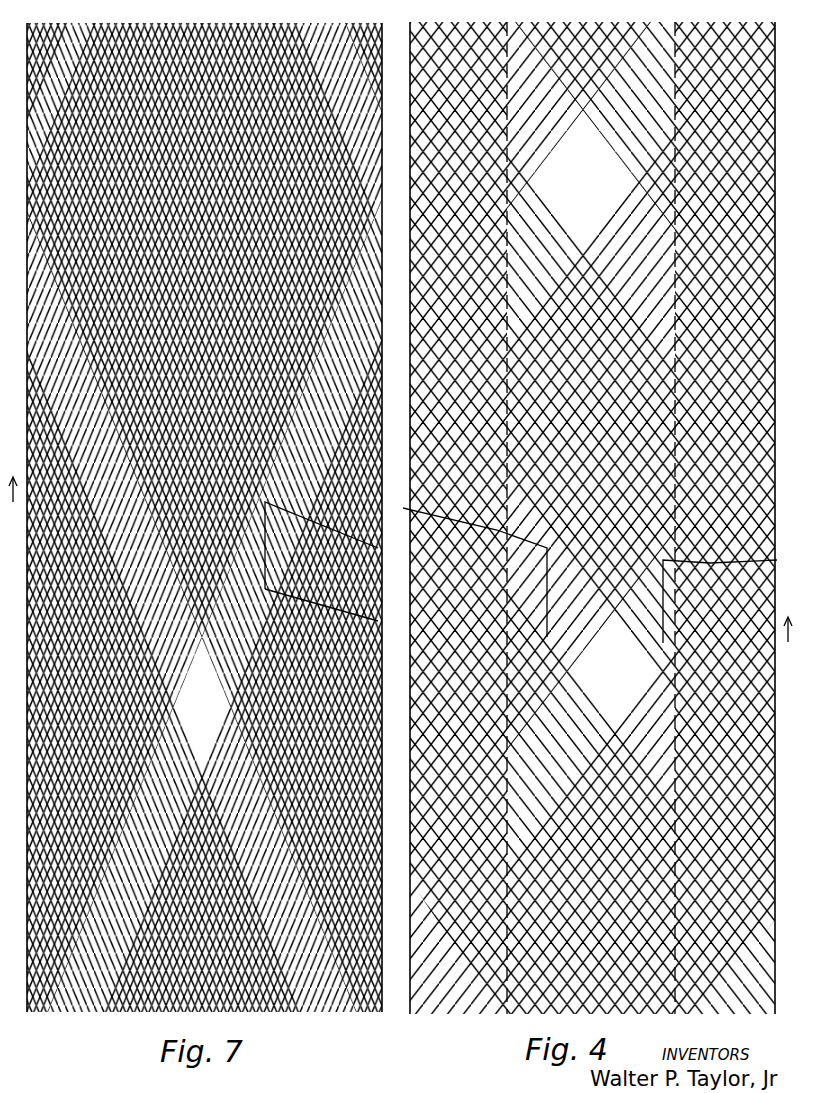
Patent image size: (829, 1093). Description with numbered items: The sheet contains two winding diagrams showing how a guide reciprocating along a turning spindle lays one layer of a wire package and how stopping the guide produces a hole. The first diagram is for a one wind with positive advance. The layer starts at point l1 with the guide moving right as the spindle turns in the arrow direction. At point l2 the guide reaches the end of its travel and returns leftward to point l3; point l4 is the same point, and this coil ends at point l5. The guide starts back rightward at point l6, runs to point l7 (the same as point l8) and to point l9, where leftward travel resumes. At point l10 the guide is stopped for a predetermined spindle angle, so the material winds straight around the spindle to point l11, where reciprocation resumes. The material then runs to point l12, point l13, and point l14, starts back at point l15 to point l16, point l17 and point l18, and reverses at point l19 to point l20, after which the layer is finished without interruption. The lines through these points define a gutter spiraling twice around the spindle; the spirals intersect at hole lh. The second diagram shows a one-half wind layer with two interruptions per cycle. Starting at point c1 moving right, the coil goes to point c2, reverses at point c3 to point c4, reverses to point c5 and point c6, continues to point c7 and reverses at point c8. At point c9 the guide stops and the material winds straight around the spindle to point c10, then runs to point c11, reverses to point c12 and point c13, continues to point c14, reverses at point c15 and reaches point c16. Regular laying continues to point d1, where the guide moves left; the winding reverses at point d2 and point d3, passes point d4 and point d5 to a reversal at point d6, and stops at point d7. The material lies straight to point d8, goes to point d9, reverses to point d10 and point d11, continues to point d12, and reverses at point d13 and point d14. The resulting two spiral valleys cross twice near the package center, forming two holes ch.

In FIG. 7, the winding point l4 is at (63, 69).
In FIG. 7, the winding point l13 is at (79, 124).
In FIG. 7, the winding point l17 is at (280, 77).
In FIG. 7, the winding point l8 is at (308, 77).
In FIG. 7, the winding point l1 is at (336, 77).
In FIG. 7, the winding point l5 is at (29, 133).
In FIG. 7, the winding point l6 is at (29, 186).
In FIG. 7, the winding point l14 is at (28, 236).
In FIG. 7, the winding point l15 is at (29, 326).
In FIG. 7, the winding point l2 is at (372, 203).
In FIG. 7, the winding point l9 is at (372, 226).
In FIG. 7, the winding point l18 is at (372, 262).
In FIG. 7, the winding point l19 is at (372, 293).
In FIG. 7, the winding point l10 is at (333, 545).
In FIG. 7, the winding point l11 is at (333, 609).
In FIG. 7, the hole lh is at (202, 702).
In FIG. 7, the winding point l3 is at (76, 1013).
In FIG. 7, the winding point l12 is at (110, 1013).
In FIG. 7, the winding point l20 is at (122, 1013).
In FIG. 7, the winding point l7 is at (288, 1013).
In FIG. 7, the winding point l16 is at (292, 1013).
In FIG. 4, the winding point c13 is at (417, 13).
In FIG. 4, the winding point c6 is at (506, 509).
In FIG. 4, the winding point c1 is at (522, 25).
In FIG. 4, the winding point d1 is at (661, 13).
In FIG. 4, the winding point d5 is at (681, 509).
In FIG. 4, the winding point d11 is at (753, 13).
In FIG. 4, the hole ch is at (591, 415).
In FIG. 4, the winding point c2 is at (768, 348).
In FIG. 4, the winding point c7 is at (768, 370).
In FIG. 4, the winding point c3 is at (766, 408).
In FIG. 4, the winding point c8 is at (768, 432).
In FIG. 4, the winding point c9 is at (768, 464).
In FIG. 4, the winding point c14 is at (733, 492).
In FIG. 4, the winding point c15 is at (768, 532).
In FIG. 4, the winding point c10 is at (733, 595).
In FIG. 4, the winding point d6 is at (410, 364).
In FIG. 4, the winding point d2 is at (414, 372).
In FIG. 4, the winding point d7 is at (440, 416).
In FIG. 4, the winding point d12 is at (414, 470).
In FIG. 4, the winding point d8 is at (469, 564).
In FIG. 4, the winding point c4 is at (410, 886).
In FIG. 4, the winding point c16 is at (428, 962).
In FIG. 4, the winding point c11 is at (410, 996).
In FIG. 4, the winding point c12 is at (412, 1012).
In FIG. 4, the winding point d3 is at (775, 830).
In FIG. 4, the winding point d13 is at (752, 916).
In FIG. 4, the winding point d9 is at (770, 926).
In FIG. 4, the winding point c5 is at (507, 1016).
In FIG. 4, the winding point d4 is at (644, 1014).
In FIG. 4, the winding point d10 is at (732, 1014).
In FIG. 4, the winding point d14 is at (758, 1014).